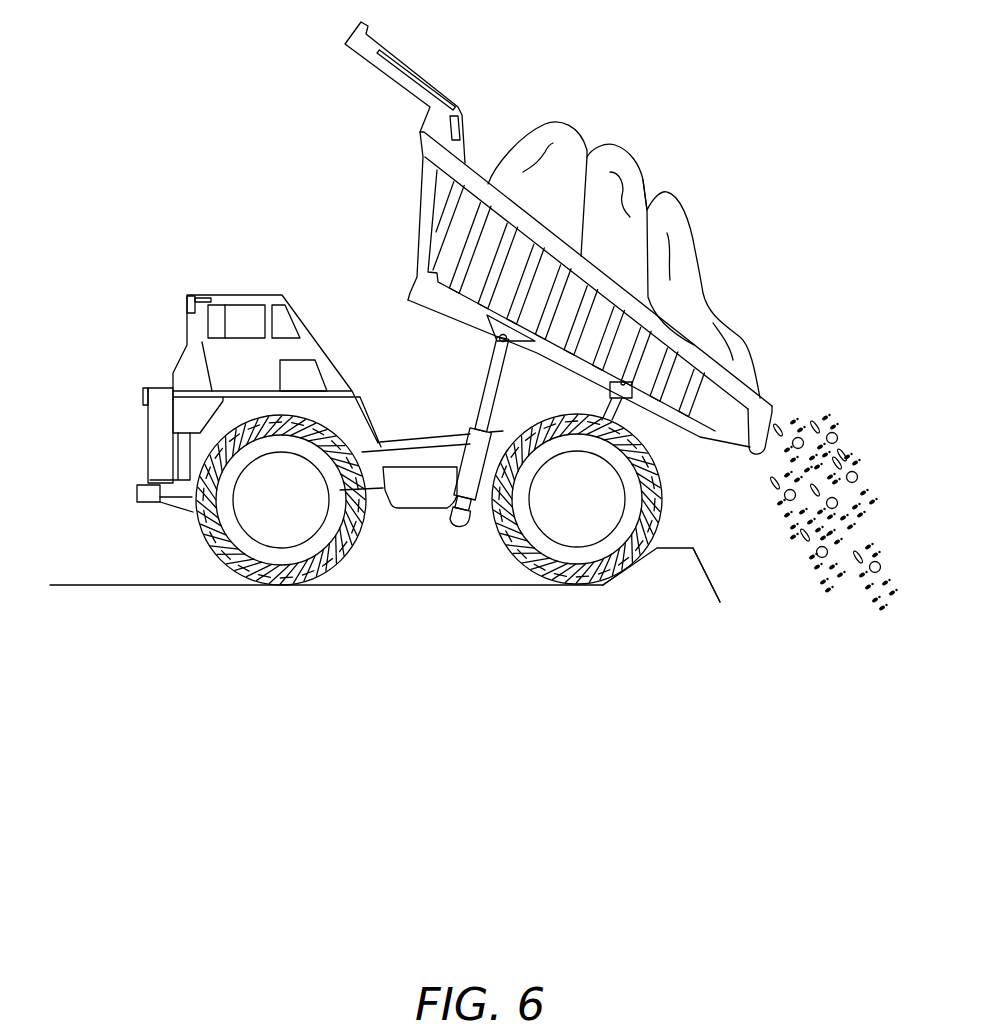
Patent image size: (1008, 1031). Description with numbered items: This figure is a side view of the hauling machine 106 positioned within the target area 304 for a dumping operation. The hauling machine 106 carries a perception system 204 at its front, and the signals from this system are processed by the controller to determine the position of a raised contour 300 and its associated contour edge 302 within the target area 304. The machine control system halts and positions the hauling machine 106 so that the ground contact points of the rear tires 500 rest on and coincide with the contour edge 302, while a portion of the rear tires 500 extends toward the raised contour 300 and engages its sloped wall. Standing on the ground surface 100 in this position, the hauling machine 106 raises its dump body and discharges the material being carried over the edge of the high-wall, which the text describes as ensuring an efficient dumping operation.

The worksite ground surface 100 is at (87, 585).
The hauling machine 106 is at (115, 252).
The perception system 204 is at (136, 395).
The raised contour 300 is at (684, 580).
The contour edge 302 is at (603, 585).
The target area 304 is at (714, 556).
The rear tires 500 is at (556, 584).